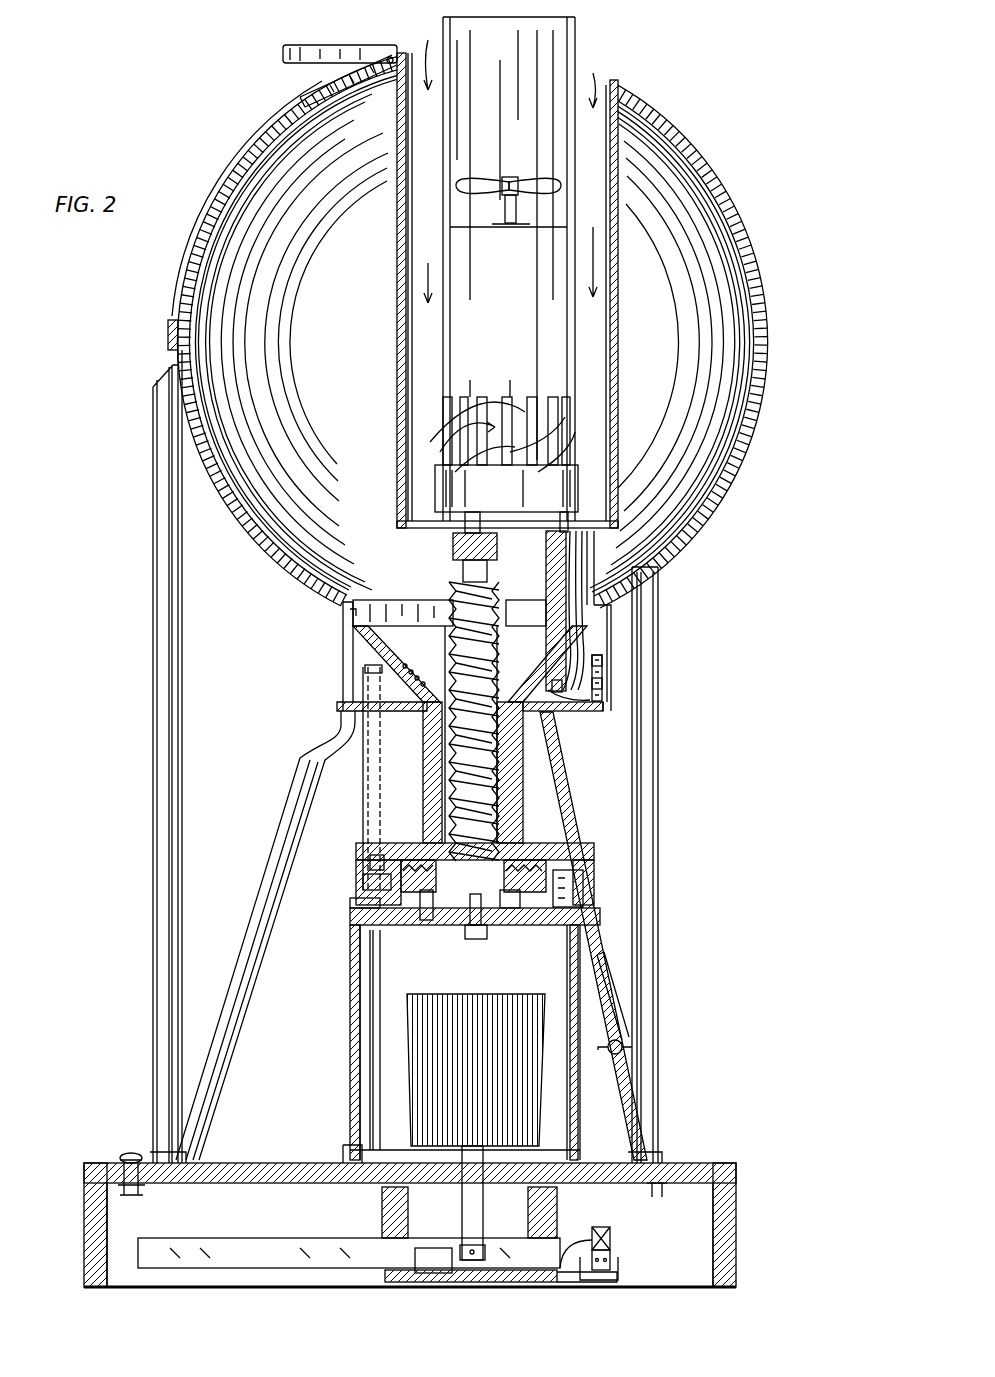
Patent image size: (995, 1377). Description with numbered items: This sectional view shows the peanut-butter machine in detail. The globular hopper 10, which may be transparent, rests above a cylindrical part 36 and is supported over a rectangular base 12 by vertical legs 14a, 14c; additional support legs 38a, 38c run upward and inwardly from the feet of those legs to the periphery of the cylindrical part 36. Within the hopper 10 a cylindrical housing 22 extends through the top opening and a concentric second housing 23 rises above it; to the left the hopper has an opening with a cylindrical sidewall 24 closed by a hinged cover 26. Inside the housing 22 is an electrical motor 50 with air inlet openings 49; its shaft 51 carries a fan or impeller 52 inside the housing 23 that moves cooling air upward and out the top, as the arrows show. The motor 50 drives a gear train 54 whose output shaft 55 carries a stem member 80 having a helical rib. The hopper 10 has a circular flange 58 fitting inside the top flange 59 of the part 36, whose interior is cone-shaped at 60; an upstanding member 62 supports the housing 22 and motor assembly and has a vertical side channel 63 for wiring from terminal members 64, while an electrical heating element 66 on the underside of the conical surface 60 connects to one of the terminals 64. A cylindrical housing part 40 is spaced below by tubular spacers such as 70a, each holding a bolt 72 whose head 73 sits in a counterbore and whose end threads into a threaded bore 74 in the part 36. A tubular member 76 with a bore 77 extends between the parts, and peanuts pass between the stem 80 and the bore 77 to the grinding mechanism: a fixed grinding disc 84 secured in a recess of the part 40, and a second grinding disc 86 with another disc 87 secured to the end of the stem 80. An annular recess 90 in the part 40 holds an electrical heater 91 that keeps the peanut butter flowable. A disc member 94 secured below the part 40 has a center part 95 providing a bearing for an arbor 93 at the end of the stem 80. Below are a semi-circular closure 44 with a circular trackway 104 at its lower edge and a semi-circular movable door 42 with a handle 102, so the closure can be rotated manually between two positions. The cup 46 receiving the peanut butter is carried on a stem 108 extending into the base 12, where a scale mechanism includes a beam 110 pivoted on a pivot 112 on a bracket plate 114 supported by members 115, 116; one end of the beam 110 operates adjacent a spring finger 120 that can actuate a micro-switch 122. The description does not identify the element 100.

The hopper 10 is at (763, 216).
The rectangular base 12 is at (752, 1211).
The vertical supporting leg 14a is at (152, 752).
The vertical supporting leg 14c is at (660, 762).
The cylindrical housing 22 is at (631, 291).
The second housing 23 is at (565, 68).
The cylindrical sidewall 24 is at (286, 95).
The hinged cover 26 is at (270, 79).
The cylindrical part 36 is at (626, 659).
The support leg 38a is at (300, 812).
The support leg 38c is at (612, 1000).
The cylindrical housing part 40 is at (612, 854).
The movable door or closure member 42 is at (352, 1025).
The semi-circular shroud or closure member 44 is at (622, 1015).
The cup or jar 46 is at (435, 1047).
The air inlet openings 49 is at (434, 407).
The electrical motor 50 is at (572, 355).
The shaft 51 is at (505, 210).
The fan or impeller 52 is at (562, 185).
The gear train 54 is at (582, 478).
The output shaft 55 is at (473, 512).
The circular flange 58 is at (376, 602).
The top flange 59 is at (343, 618).
The cone-shaped interior 60 is at (408, 655).
The vertical upstanding member 62 is at (537, 547).
The vertical side channel 63 is at (585, 558).
The terminal members 64 is at (606, 713).
The electrical heating element 66 is at (560, 696).
The cylindrical tubular spacer 70a is at (368, 862).
The bolt member 72 is at (363, 882).
The head 73 is at (360, 908).
The threaded bore 74 is at (365, 688).
The tubular member 76 is at (432, 725).
The bore 77 is at (500, 790).
The stem member having a helical rib 80 is at (455, 548).
The fixed grinding disc 84 is at (398, 860).
The second grinding disc 86 is at (428, 920).
The disc 87 is at (586, 885).
The annular recess 90 is at (512, 908).
The electrical heater 91 is at (370, 985).
The arbor or stem 93 is at (478, 925).
The disc member 94 is at (615, 918).
The center part 95 is at (468, 939).
The liner 100 is at (378, 1075).
The handle 102 is at (624, 1045).
The circular trackway 104 is at (338, 1148).
The stem 108 is at (466, 1200).
The beam 110 is at (285, 1222).
The pivot 112 is at (415, 1260).
The plate 114 is at (462, 1284).
The member 115 is at (382, 1210).
The member 116 is at (557, 1215).
The spring finger 120 is at (612, 1232).
The micro-switch 122 is at (612, 1258).